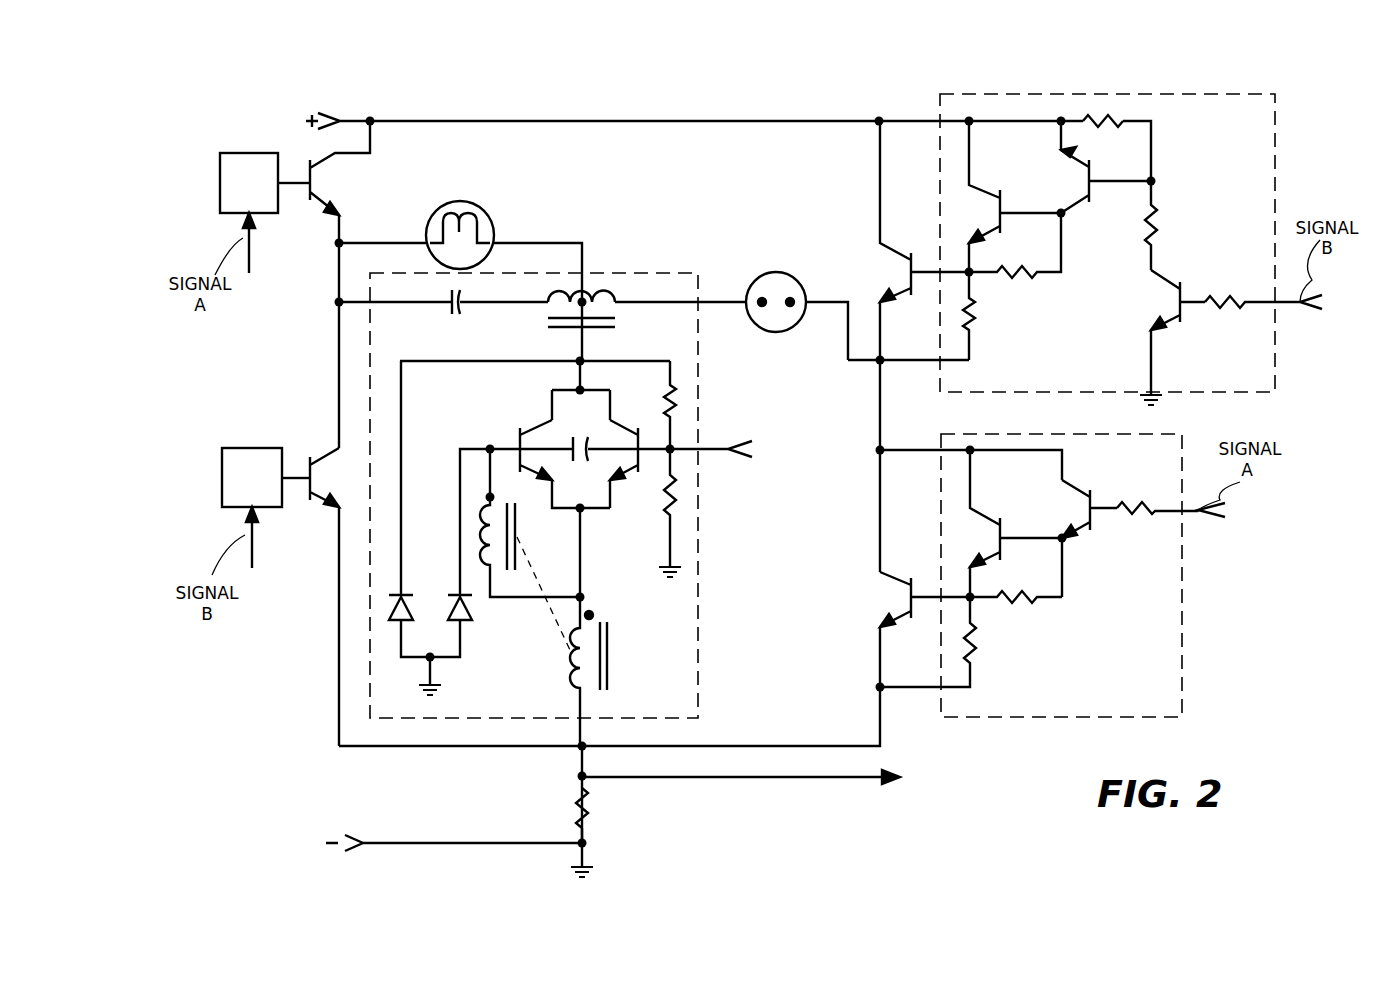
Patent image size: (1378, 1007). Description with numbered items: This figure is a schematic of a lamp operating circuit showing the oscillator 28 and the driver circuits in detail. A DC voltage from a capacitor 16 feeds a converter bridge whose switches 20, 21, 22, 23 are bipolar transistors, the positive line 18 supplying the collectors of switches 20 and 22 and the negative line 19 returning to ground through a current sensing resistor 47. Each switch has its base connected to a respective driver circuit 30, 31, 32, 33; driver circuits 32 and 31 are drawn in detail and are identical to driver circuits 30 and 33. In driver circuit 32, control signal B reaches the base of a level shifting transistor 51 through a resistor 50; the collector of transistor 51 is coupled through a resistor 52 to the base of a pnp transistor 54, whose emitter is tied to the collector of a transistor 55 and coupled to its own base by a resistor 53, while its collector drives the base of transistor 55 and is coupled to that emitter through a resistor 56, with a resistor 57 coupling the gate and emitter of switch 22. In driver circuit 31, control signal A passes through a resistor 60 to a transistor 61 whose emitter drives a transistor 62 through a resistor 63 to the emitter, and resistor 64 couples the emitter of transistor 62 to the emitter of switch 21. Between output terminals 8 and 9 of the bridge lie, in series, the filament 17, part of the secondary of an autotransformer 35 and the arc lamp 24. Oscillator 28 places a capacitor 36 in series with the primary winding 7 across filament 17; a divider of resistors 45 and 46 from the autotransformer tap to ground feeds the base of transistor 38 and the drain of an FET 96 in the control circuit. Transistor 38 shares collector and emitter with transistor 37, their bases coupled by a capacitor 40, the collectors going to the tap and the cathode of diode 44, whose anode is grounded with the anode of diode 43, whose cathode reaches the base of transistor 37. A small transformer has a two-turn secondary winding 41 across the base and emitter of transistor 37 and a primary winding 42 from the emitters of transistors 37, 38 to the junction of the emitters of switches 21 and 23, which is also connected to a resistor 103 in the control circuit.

The primary winding 7 is at (553, 297).
The output terminal 8 is at (338, 265).
The output terminal 9 is at (878, 362).
The capacitor 16 is at (380, 484).
The filament 17 is at (437, 208).
The positive supply line 18 is at (607, 122).
The negative supply line 19 is at (472, 843).
The switch 20 is at (322, 205).
The switch 21 is at (897, 570).
The switch 22 is at (905, 265).
The switch 23 is at (320, 453).
The arc lamp 24 is at (760, 280).
The oscillator 28 is at (698, 545).
The driver circuit 30 is at (265, 183).
The driver circuit 31 is at (1182, 650).
The driver circuit 32 is at (1275, 165).
The driver circuit 33 is at (266, 477).
The autotransformer 35 is at (620, 306).
The capacitor 36 is at (452, 308).
The transistor 37 is at (532, 425).
The transistor 38 is at (625, 420).
The capacitor 40 is at (576, 462).
The secondary winding 41 is at (518, 532).
The primary winding 42 is at (575, 672).
The diode 43 is at (470, 625).
The diode 44 is at (413, 580).
The resistor 45 is at (675, 400).
The resistor 46 is at (665, 490).
The current sensing resistor 47 is at (585, 805).
The resistor 50 is at (1225, 298).
The level shifting transistor 51 is at (1152, 285).
The resistor 52 is at (1160, 226).
The resistor 53 is at (1125, 115).
The pnp transistor 54 is at (1080, 200).
The transistor 55 is at (985, 195).
The resistor 56 is at (1025, 276).
The resistor 57 is at (975, 328).
The resistor 60 is at (1130, 500).
The transistor 61 is at (1080, 485).
The transistor 62 is at (1000, 520).
The resistor 63 is at (1020, 600).
The resistor 64 is at (975, 660).
The FET 96 is at (761, 454).
The resistor 103 is at (792, 779).